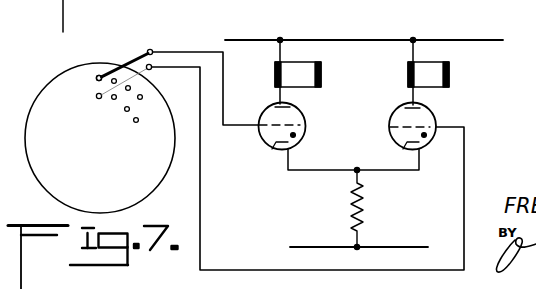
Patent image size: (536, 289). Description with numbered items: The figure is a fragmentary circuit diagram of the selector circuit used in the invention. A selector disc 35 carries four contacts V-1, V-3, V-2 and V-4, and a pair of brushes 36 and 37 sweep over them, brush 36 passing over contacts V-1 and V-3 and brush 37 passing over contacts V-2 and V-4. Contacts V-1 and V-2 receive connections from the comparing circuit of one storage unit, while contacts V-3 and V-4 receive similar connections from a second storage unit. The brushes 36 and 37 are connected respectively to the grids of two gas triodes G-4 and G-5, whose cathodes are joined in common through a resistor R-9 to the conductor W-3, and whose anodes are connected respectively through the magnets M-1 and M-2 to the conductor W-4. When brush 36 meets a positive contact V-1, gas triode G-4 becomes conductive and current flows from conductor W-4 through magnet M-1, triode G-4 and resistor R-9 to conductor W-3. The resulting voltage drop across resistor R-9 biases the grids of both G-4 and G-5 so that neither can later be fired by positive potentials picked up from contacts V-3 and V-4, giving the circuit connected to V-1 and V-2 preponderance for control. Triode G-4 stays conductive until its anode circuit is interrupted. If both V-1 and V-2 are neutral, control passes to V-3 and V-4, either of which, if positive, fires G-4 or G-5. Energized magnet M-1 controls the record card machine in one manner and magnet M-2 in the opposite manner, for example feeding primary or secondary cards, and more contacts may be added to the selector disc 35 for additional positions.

The selector disc 35 is at (155, 179).
The brush 36 is at (150, 50).
The brush 37 is at (152, 69).
The contact V-1 is at (97, 76).
The contact V-2 is at (96, 97).
The contact V-3 is at (96, 79).
The contact V-4 is at (113, 100).
The conductor W-4 is at (368, 39).
The conductor W-3 is at (378, 246).
The magnet M-1 is at (310, 66).
The magnet M-2 is at (436, 67).
The gas triode G-4 is at (300, 117).
The gas triode G-5 is at (426, 117).
The resistor R-9 is at (362, 206).